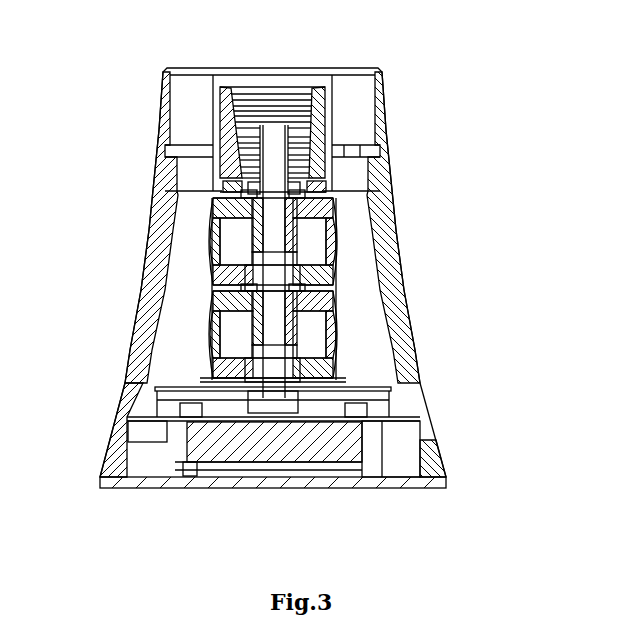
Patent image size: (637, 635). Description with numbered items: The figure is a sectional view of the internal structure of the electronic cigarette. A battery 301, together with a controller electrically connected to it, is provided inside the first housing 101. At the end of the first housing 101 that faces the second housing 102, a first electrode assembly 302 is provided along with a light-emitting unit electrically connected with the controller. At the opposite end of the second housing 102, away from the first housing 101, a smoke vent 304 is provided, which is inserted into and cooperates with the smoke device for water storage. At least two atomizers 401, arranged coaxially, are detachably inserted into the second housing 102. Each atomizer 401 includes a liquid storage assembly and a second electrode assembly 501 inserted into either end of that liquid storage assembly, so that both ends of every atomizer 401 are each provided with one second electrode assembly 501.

The first housing 101 is at (346, 460).
The second housing 102 is at (340, 225).
The battery 301 is at (274, 494).
The first electrode assembly 302 is at (368, 368).
The smoke vent 304 is at (182, 99).
The atomizer 401 is at (175, 285).
The second electrode assembly 501 is at (400, 199).